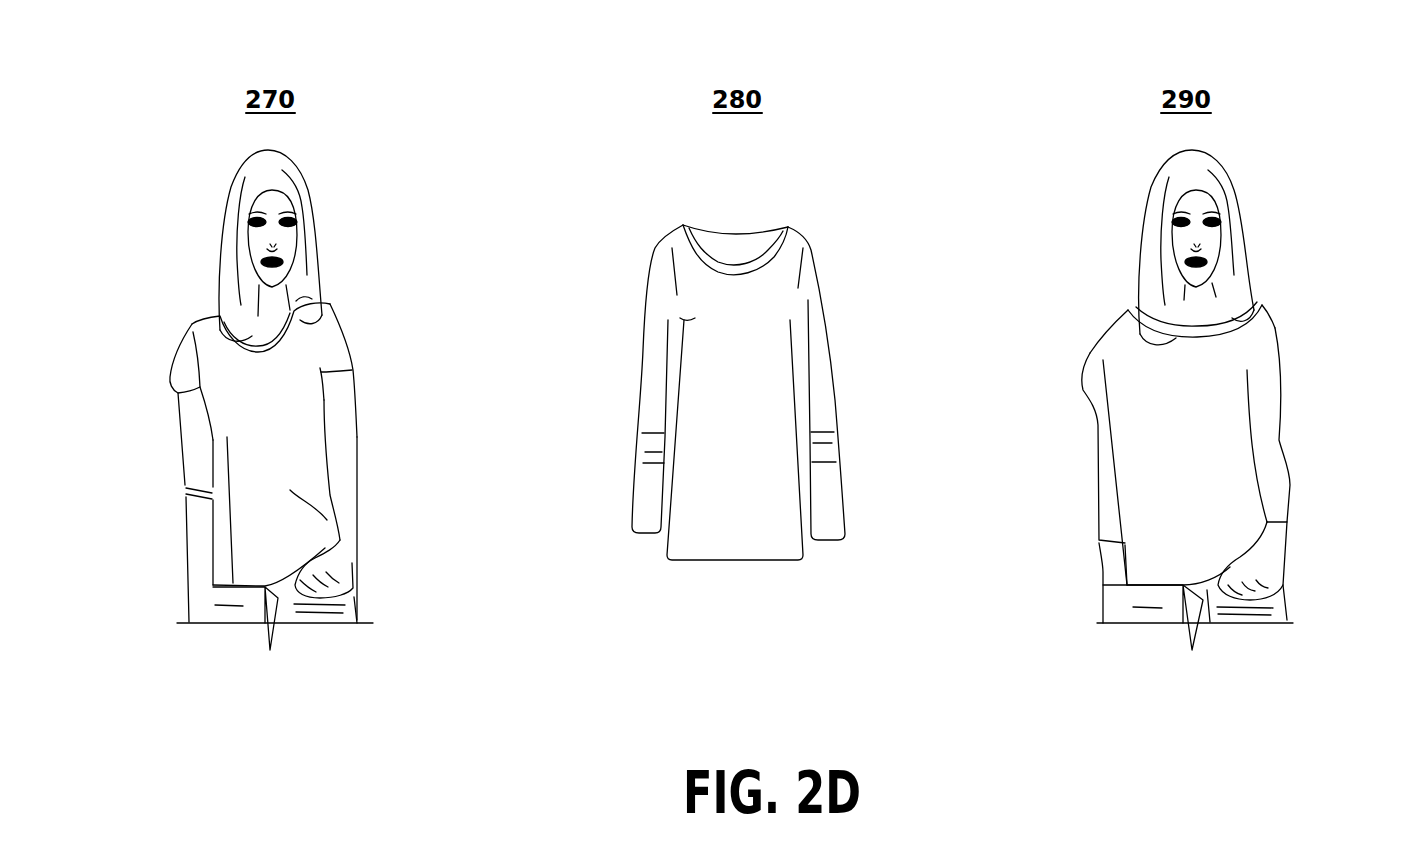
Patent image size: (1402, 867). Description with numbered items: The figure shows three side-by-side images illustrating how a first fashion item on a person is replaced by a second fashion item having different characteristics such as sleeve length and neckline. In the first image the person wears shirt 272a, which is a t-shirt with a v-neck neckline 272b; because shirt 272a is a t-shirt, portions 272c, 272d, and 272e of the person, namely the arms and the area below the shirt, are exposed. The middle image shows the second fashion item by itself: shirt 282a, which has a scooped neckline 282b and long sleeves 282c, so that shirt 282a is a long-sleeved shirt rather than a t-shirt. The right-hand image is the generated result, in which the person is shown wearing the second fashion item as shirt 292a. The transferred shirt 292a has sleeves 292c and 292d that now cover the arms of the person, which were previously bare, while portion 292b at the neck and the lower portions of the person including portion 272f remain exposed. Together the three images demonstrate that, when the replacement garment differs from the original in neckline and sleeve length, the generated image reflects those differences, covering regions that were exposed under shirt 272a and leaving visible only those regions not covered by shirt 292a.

The shirt 272a is at (235, 372).
The neckline 272b is at (300, 292).
The portion of the person 272c is at (347, 465).
The portion of the person 272d is at (197, 567).
The portion of the person 272e is at (343, 570).
The portion of the person 272f is at (1275, 578).
The shirt 282a is at (740, 550).
The neckline 282b is at (729, 238).
The sleeves 282c is at (655, 381).
The shirt 292a is at (1160, 493).
The portion of the person 292b is at (1165, 276).
The sleeve 292c is at (1098, 425).
The sleeve 292d is at (1271, 397).